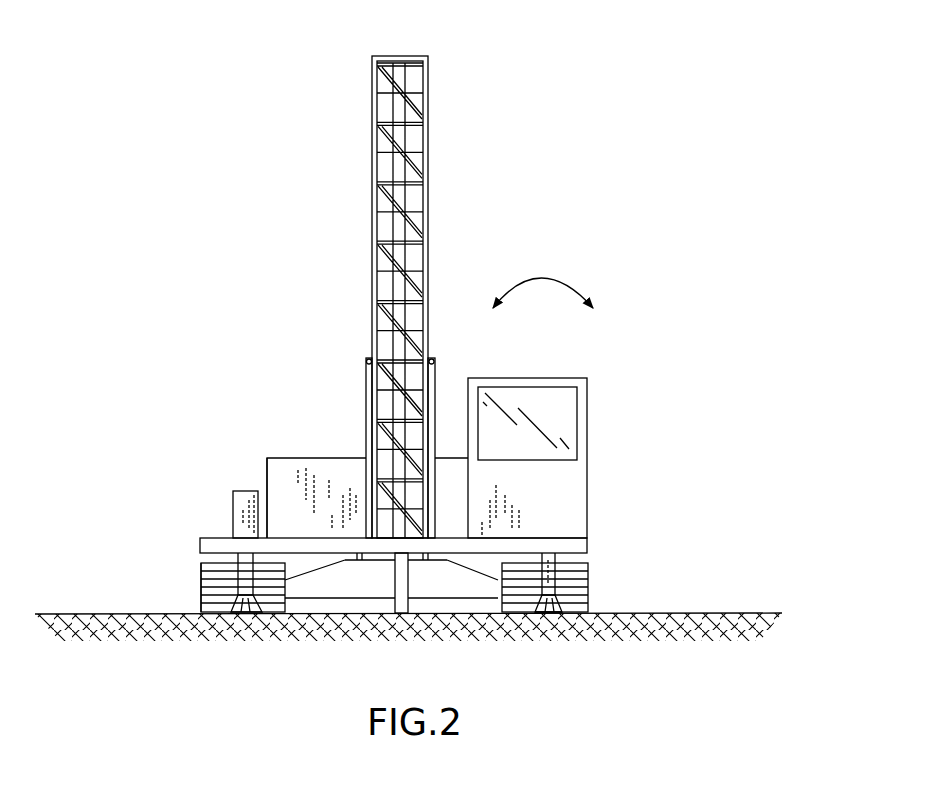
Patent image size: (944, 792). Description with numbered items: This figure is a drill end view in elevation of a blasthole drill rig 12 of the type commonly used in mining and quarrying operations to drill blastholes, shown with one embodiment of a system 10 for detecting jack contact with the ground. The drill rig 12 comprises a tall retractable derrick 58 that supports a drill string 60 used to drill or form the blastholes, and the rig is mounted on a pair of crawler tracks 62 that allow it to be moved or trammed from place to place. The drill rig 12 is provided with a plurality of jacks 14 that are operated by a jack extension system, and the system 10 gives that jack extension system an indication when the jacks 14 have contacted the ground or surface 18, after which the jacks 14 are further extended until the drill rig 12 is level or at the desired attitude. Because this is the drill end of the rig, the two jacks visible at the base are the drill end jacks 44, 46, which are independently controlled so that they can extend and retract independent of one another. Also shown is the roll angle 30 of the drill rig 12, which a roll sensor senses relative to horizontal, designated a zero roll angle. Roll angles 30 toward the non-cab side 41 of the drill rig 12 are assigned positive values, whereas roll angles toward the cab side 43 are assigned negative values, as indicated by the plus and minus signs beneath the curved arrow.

The system for detecting jack contact with the ground 10 is at (136, 110).
The drill rig 12 is at (309, 455).
The jacks 14 is at (239, 488).
The ground or surface 18 is at (58, 613).
The roll angle 30 is at (540, 277).
The non-cab side 41 is at (265, 468).
The cab side 43 is at (588, 481).
The drill end jack 44 is at (562, 610).
The drill end jack 46 is at (201, 600).
The retractable derrick 58 is at (433, 78).
The drill string 60 is at (397, 221).
The crawler tracks 62 is at (197, 569).